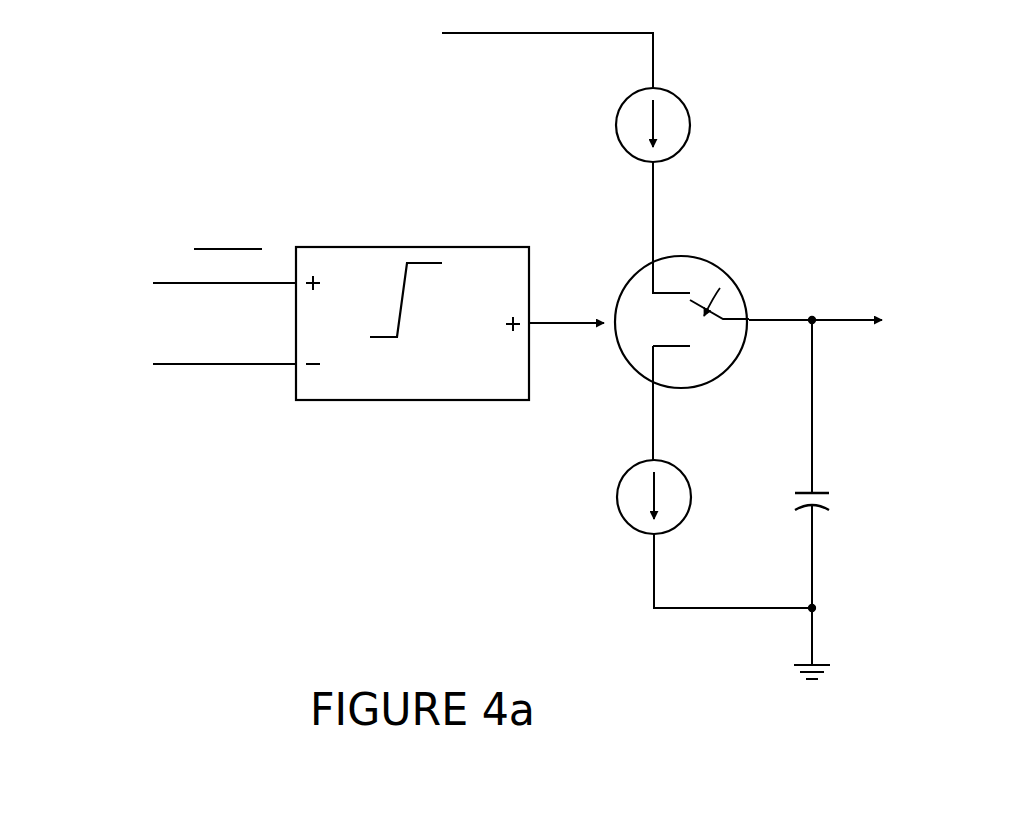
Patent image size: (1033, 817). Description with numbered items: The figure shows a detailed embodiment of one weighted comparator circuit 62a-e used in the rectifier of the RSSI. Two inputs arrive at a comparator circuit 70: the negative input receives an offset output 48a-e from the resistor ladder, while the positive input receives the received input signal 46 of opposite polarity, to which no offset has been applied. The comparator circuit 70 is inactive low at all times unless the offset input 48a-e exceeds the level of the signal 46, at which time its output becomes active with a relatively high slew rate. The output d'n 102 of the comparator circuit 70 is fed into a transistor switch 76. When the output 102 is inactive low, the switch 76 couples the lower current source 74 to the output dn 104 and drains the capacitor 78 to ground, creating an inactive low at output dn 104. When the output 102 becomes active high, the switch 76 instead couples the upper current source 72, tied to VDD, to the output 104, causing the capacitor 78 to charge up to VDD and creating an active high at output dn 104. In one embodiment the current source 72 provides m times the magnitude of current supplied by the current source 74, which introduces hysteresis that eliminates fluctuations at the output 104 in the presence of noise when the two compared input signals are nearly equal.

The weighted comparator circuit 62a-e is at (230, 100).
The received input signal 46 is at (182, 283).
The resistor ladder outputs 48a-e is at (188, 364).
The comparator circuit 70 is at (357, 247).
The output d'n 102 is at (548, 322).
The current source 72 is at (676, 98).
The current source 74 is at (618, 518).
The transistor switch 76 is at (706, 257).
The output dn 104 is at (867, 320).
The capacitor 78 is at (823, 493).